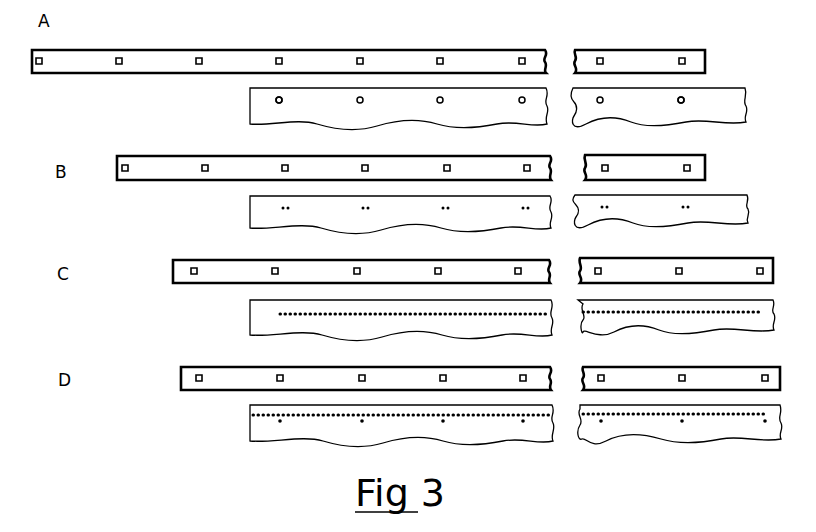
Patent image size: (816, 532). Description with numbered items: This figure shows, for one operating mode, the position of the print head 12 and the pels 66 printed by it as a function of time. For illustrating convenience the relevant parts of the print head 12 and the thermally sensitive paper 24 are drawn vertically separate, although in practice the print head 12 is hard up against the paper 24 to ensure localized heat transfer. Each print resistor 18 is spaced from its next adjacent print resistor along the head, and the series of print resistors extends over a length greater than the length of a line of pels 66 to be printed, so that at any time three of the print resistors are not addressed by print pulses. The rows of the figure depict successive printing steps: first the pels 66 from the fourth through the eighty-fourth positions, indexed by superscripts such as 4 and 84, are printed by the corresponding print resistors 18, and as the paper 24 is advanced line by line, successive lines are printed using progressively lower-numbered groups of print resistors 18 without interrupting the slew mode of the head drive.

The print head 12 is at (473, 58).
The print resistor 18 is at (39, 58).
The paper 24 is at (712, 94).
The pels 66 is at (458, 260).
The mark 84 is at (680, 100).
The mark 4 is at (278, 101).